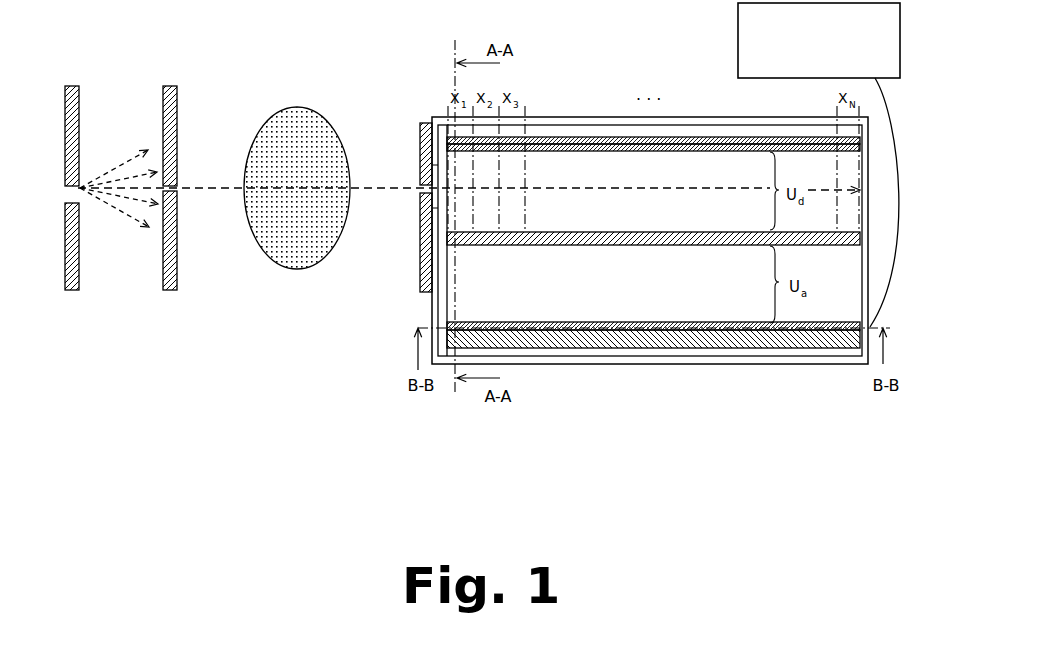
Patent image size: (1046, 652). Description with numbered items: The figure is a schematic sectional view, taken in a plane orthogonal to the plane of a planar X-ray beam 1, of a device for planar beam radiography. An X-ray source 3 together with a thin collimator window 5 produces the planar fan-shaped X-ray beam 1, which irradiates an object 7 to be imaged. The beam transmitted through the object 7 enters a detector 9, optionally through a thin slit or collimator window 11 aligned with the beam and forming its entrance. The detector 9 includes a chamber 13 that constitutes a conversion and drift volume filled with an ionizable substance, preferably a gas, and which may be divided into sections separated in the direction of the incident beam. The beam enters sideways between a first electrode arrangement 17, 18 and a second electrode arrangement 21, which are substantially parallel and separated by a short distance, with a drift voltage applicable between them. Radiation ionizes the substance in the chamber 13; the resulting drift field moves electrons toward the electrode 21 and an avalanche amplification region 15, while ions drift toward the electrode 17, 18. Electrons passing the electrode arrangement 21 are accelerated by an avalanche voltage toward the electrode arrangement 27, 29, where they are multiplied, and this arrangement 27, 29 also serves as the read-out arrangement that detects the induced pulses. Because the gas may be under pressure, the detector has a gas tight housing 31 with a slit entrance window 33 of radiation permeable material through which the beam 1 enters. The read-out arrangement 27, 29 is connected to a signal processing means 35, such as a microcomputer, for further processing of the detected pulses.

The planar X-ray beam 1 is at (213, 187).
The X-ray source 3 is at (77, 187).
The collimator window 5 is at (177, 273).
The object 7 is at (295, 269).
The detector 9 is at (378, 417).
The slit or collimator window 11 is at (420, 196).
The chamber 13 is at (483, 180).
The avalanche amplification region 15 is at (447, 298).
The first electrode arrangement 17 is at (688, 151).
The first electrode arrangement 18 is at (640, 151).
The second electrode arrangement 21 is at (612, 245).
The electrode arrangement 27 is at (568, 328).
The electrode arrangement 29 is at (515, 342).
The gas tight housing 31 is at (797, 364).
The slit entrance window 33 is at (420, 178).
The signal processing means 35 is at (738, 37).